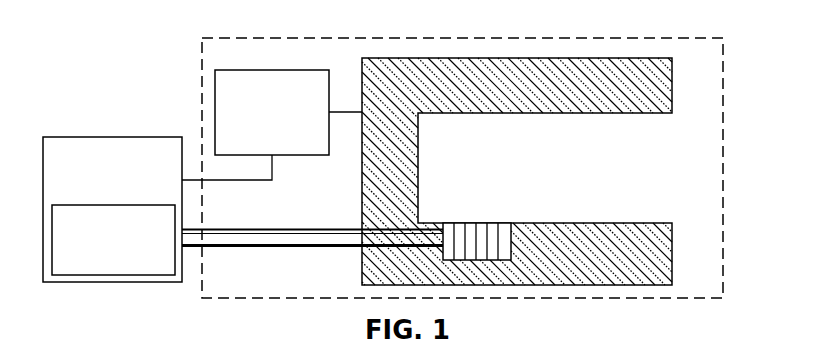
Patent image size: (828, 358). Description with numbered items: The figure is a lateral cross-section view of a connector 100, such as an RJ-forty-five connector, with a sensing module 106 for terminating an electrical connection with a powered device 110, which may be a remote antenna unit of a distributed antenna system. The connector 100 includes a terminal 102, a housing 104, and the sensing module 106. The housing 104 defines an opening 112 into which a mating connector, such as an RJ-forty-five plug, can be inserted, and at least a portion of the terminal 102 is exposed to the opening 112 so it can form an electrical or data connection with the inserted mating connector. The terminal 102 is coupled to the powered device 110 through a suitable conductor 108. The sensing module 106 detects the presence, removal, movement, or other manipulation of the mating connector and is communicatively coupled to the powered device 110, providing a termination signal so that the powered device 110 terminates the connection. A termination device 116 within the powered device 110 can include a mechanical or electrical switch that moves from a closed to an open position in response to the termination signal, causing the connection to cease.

The connector 100 is at (198, 31).
The terminal 102 is at (466, 216).
The housing 104 is at (492, 110).
The sensing module 106 is at (272, 112).
The conductor 108 is at (299, 219).
The powered device 110 is at (112, 209).
The opening 112 is at (664, 139).
The termination device 116 is at (113, 240).